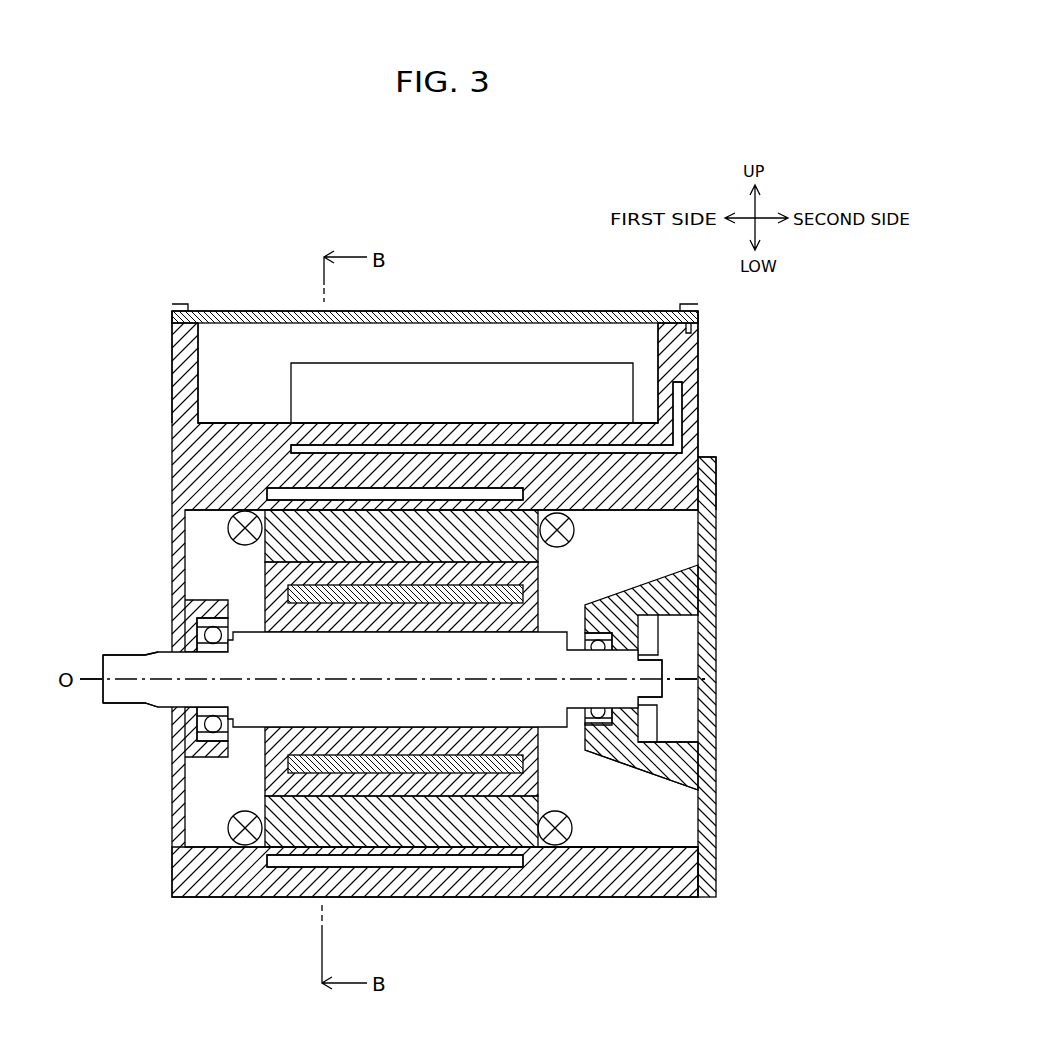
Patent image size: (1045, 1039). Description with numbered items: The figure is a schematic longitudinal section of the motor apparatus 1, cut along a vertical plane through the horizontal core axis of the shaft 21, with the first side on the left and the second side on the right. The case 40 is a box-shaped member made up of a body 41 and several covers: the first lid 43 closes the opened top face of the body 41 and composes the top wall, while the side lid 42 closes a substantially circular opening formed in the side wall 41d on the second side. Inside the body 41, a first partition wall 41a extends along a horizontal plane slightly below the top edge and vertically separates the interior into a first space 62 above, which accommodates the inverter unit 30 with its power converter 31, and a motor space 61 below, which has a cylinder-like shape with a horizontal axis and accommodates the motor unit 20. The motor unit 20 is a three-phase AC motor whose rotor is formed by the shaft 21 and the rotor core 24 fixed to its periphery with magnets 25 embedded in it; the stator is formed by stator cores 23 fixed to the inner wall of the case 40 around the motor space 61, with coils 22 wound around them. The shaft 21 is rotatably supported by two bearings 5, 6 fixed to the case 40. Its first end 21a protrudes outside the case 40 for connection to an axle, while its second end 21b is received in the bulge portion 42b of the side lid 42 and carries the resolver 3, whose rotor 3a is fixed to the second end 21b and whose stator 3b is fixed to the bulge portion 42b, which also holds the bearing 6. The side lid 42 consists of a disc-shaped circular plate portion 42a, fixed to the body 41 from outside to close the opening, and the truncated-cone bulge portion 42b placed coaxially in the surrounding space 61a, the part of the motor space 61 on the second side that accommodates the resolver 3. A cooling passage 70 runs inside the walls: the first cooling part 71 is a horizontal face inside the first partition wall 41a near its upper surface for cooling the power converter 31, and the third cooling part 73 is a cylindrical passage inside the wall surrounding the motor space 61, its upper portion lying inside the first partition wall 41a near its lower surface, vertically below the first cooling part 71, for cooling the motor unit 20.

The motor apparatus 1 is at (445, 272).
The resolver 3 is at (684, 666).
The rotor 3a is at (650, 690).
The stator 3b is at (653, 722).
The bearing 5 is at (188, 631).
The bearing 6 is at (597, 637).
The motor unit 20 is at (628, 945).
The shaft 21 is at (562, 736).
The first end 21a is at (123, 697).
The second end 21b is at (650, 683).
The coil 22 is at (553, 845).
The stator core 23 is at (487, 830).
The rotor core 24 is at (437, 787).
The magnet 25 is at (378, 768).
The inverter unit 30 is at (462, 348).
The power converter 31 is at (556, 363).
The case 40 is at (714, 363).
The body 41 is at (158, 592).
The first partition wall 41a is at (470, 462).
The side wall 41d is at (700, 478).
The side lid 42 is at (722, 528).
The circular plate portion 42a is at (713, 806).
The bulge portion 42b is at (667, 777).
The first lid 43 is at (238, 311).
The motor space 61 is at (192, 822).
The surrounding space 61a is at (663, 838).
The first space 62 is at (210, 348).
The cooling passage 70 is at (376, 663).
The first cooling part 71 is at (290, 448).
The third cooling part 73 is at (265, 494).